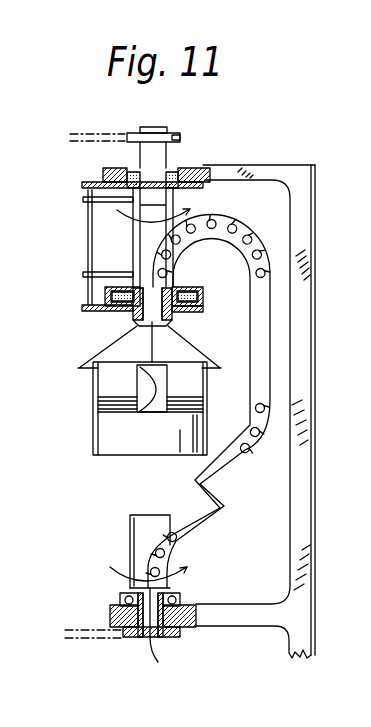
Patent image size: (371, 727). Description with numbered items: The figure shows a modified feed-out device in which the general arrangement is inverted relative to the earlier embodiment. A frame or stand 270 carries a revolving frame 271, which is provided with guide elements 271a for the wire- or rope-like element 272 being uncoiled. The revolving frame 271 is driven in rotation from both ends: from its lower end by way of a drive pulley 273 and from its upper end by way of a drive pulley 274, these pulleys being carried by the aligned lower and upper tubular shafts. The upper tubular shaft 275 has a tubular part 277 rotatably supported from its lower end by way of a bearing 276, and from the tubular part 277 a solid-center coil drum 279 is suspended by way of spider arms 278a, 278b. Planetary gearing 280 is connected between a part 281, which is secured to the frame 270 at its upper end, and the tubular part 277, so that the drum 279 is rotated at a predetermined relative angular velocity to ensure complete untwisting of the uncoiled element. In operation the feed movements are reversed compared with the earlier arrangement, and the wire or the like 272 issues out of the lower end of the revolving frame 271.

The frame or stand 270 is at (307, 470).
The revolving frame 271 is at (216, 514).
The guide elements 271a is at (262, 227).
The wire- or rope-like element 272 is at (196, 507).
The drive pulley 273 is at (178, 637).
The drive pulley 274 is at (176, 138).
The upper tubular shaft 275 is at (170, 200).
The bearing 276 is at (203, 292).
The tubular part 277 is at (176, 318).
The spider arm 278a is at (121, 338).
The spider arm 278b is at (189, 361).
The solid-center coil drum 279 is at (95, 410).
The planetary gearing 280 is at (85, 242).
The part secured to frame 281 is at (122, 165).